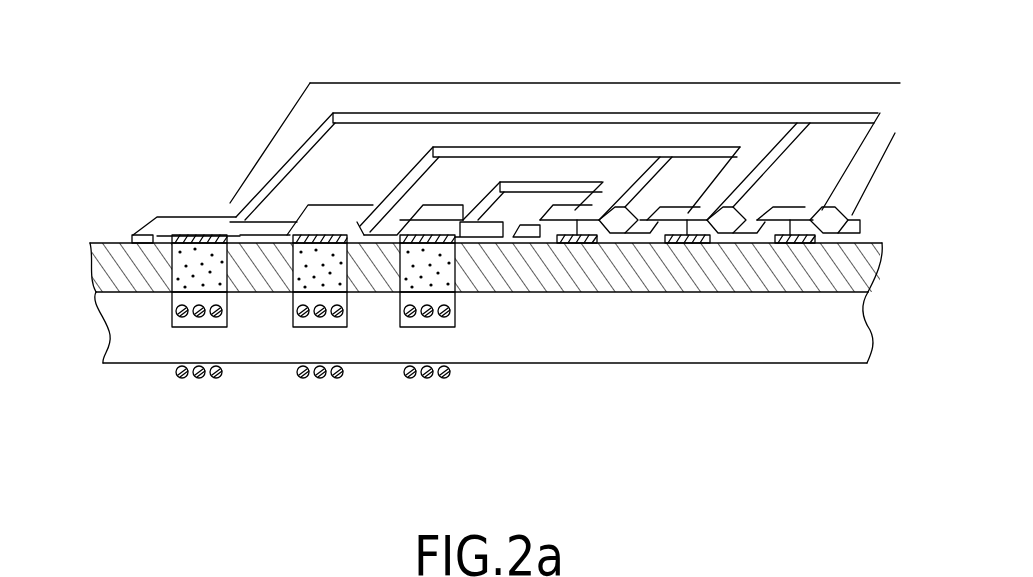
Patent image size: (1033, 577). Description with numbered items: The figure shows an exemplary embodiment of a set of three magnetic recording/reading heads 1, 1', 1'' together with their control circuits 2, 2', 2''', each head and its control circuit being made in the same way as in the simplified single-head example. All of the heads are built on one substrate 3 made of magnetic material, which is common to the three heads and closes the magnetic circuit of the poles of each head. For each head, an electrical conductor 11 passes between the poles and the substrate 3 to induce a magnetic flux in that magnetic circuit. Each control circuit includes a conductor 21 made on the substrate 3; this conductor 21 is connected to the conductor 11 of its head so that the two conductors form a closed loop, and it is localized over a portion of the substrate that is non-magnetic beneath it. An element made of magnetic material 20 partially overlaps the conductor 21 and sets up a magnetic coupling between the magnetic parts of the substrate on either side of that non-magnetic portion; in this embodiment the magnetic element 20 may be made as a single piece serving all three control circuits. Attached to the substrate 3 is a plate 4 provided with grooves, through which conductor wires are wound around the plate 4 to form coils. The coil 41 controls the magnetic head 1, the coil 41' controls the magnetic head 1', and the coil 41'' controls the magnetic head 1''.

The magnetic head 1 is at (606, 125).
The magnetic head 1' is at (725, 125).
The magnetic head 1'' is at (826, 124).
The control circuit 2 is at (483, 131).
The control circuit 2' is at (513, 130).
The second lead 2''' is at (565, 123).
The substrate 3 is at (93, 280).
The plate 4 is at (120, 335).
The electrical conductor 11 is at (575, 247).
The element made of magnetic material 20 is at (181, 217).
The conductor 21 is at (468, 247).
The conductor wire 41 is at (423, 402).
The coil 41' is at (304, 402).
The coil 41'' is at (179, 402).